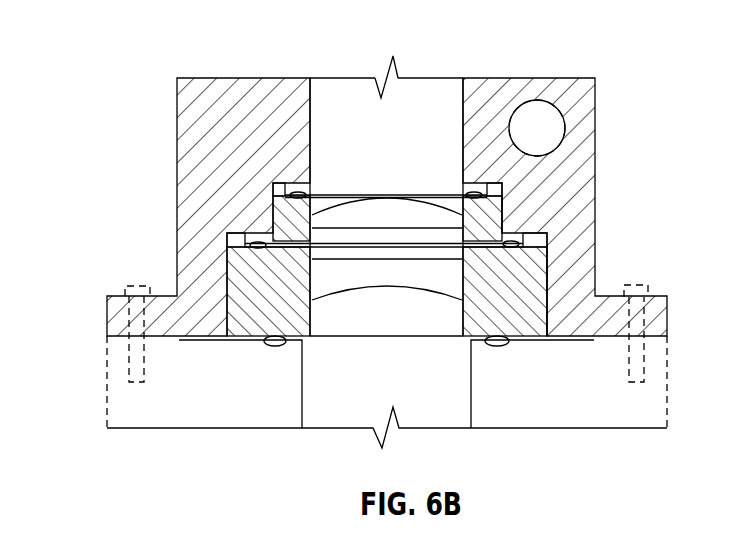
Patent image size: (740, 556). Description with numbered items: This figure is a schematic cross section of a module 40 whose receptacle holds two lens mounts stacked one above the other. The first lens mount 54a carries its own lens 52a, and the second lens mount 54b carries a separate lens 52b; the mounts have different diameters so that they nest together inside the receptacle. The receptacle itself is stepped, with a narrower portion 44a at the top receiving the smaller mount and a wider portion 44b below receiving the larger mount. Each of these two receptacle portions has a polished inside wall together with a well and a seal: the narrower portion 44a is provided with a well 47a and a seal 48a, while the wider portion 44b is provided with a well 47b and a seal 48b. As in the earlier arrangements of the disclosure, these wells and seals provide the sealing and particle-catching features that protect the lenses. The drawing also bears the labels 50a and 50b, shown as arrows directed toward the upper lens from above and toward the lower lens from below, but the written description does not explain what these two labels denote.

The module 40 is at (80, 34).
The narrower portion 44a is at (271, 222).
The wider portion 44b is at (227, 280).
The well 47a is at (272, 191).
The well 47b is at (226, 240).
The seal 48a is at (300, 194).
The seal 48b is at (260, 248).
The upper light path 50a is at (359, 176).
The lower light path 50b is at (356, 350).
The lens 52a is at (402, 210).
The lens 52b is at (447, 283).
The lens mount 54a is at (503, 225).
The lens mount 54b is at (548, 289).